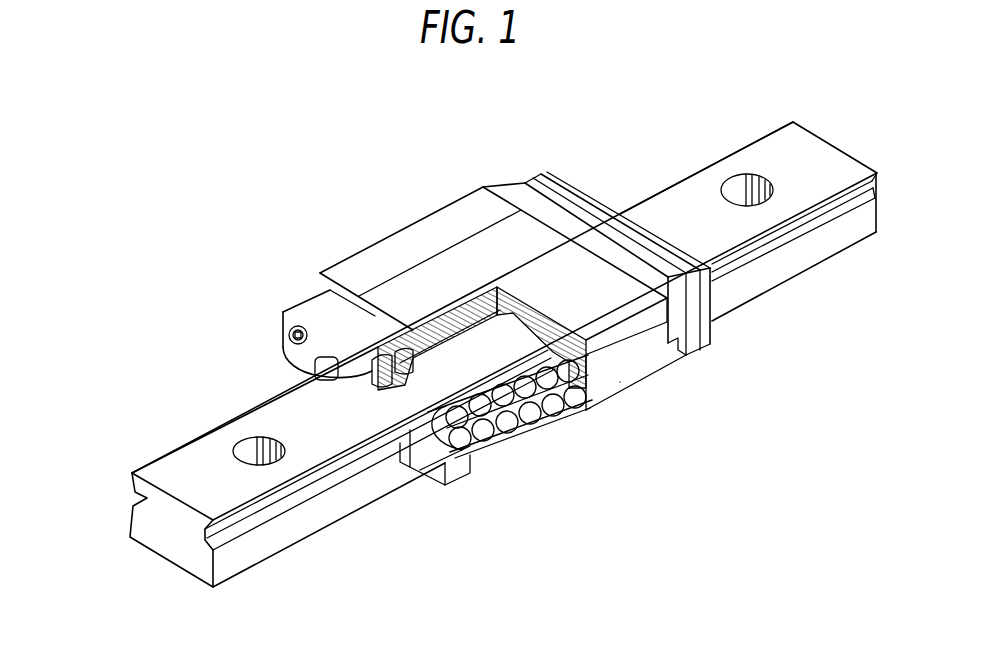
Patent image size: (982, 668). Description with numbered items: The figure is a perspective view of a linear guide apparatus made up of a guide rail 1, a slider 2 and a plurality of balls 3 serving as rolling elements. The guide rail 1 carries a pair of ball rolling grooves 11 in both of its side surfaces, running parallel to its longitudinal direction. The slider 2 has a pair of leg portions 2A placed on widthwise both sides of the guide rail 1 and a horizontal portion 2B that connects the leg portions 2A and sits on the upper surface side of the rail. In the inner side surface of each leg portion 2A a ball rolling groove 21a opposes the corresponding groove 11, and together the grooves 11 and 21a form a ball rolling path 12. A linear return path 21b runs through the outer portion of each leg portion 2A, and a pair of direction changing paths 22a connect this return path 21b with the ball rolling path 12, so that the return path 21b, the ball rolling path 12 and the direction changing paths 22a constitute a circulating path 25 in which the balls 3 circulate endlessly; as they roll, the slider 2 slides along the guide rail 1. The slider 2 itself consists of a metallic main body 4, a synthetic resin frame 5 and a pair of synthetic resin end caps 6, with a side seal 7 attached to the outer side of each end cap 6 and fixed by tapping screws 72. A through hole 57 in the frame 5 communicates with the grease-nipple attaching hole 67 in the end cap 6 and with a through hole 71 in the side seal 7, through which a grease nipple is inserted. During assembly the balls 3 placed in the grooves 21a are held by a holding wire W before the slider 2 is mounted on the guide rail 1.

The guide rail 1 is at (264, 578).
The ball rolling grooves 11 is at (137, 495).
The slider 2 is at (433, 198).
The leg portions 2A is at (390, 253).
The horizontal portion 2B is at (427, 273).
The balls 3 is at (443, 463).
The main body 4 is at (450, 210).
The frame 5 is at (508, 190).
The end caps 6 is at (527, 182).
The side seal 7 is at (567, 190).
The ball rolling path 12 is at (513, 440).
The ball rolling grooves 21a is at (553, 417).
The return path 21b is at (537, 440).
The direction changing paths 22a is at (500, 457).
The circulating path 25 is at (597, 545).
The holding wire W is at (465, 463).
The through hole 57 is at (405, 375).
The through hole (grease-nipple attaching hole) 67 is at (385, 385).
The through hole 71 is at (302, 368).
The tapping screws 72 is at (286, 333).